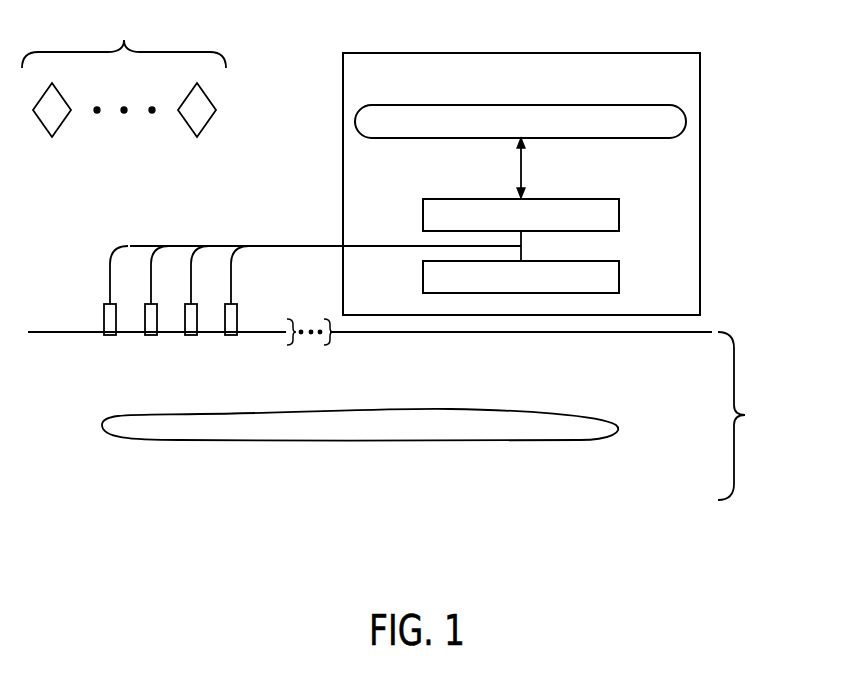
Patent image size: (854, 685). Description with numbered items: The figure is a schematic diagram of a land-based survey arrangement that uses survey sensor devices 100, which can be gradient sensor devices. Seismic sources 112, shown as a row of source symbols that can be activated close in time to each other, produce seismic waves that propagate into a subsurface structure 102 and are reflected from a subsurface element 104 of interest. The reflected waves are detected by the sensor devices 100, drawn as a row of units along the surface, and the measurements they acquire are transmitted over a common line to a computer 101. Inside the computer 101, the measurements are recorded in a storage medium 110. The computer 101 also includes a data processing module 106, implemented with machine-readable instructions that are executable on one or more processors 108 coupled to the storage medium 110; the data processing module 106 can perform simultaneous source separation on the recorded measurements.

The survey sensor devices 100 is at (231, 336).
The computer 101 is at (521, 53).
The subsurface structure 102 is at (745, 415).
The subsurface element 104 is at (429, 440).
The data processing module 106 is at (686, 107).
The processors 108 is at (619, 212).
The storage medium 110 is at (619, 275).
The seismic sources 112 is at (124, 72).